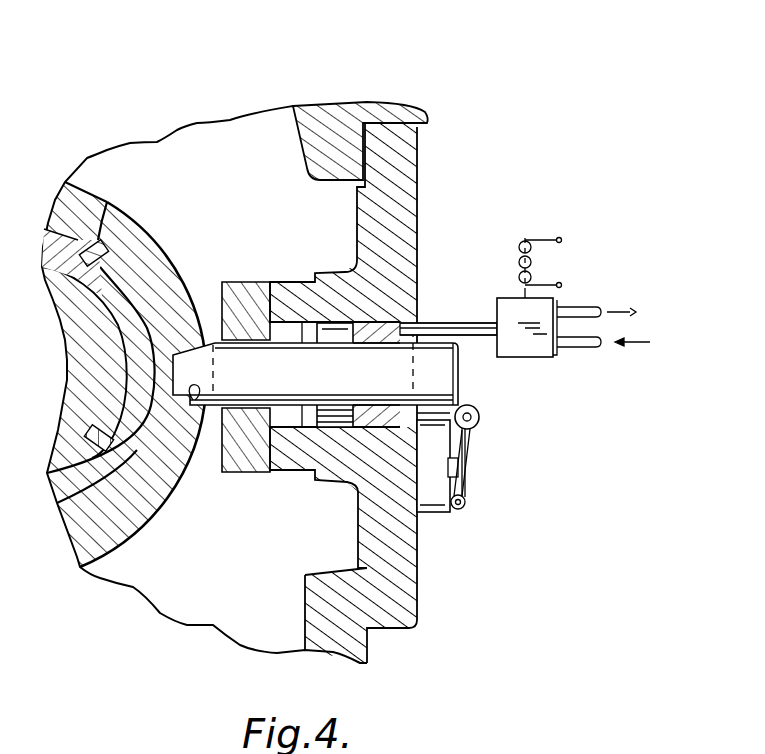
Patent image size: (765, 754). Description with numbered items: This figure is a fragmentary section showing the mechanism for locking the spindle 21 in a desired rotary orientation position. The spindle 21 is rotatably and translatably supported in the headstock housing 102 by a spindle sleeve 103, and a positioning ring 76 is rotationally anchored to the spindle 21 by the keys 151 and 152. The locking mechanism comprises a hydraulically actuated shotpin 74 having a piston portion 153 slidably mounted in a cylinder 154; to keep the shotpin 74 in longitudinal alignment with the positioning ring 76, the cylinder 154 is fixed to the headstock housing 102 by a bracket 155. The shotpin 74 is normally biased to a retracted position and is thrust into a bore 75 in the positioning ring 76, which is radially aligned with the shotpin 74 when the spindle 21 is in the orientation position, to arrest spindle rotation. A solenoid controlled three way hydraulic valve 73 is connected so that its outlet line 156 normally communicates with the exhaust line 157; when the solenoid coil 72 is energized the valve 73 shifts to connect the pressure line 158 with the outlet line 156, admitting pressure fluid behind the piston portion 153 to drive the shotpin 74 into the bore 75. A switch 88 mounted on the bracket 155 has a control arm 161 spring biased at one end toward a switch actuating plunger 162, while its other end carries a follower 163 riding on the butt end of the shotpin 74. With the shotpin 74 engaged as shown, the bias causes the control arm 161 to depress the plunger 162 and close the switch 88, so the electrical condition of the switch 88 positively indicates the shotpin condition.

The spindle 21 is at (62, 347).
The solenoid coil 72 is at (533, 233).
The hydraulic valve 73 is at (548, 357).
The shotpin 74 is at (258, 392).
The bore 75 is at (185, 393).
The positioning ring 76 is at (133, 240).
The switch 88 is at (440, 520).
The headstock housing 102 is at (303, 103).
The spindle sleeve 103 is at (147, 293).
The key 151 is at (99, 240).
The key 152 is at (107, 543).
The piston portion 153 is at (325, 323).
The cylinder 154 is at (388, 323).
The bracket 155 is at (427, 132).
The outlet line 156 is at (443, 323).
The exhaust line 157 is at (593, 307).
The pressure line 158 is at (583, 353).
The control arm 161 is at (467, 487).
The switch actuating plunger 162 is at (457, 460).
The follower 163 is at (467, 403).